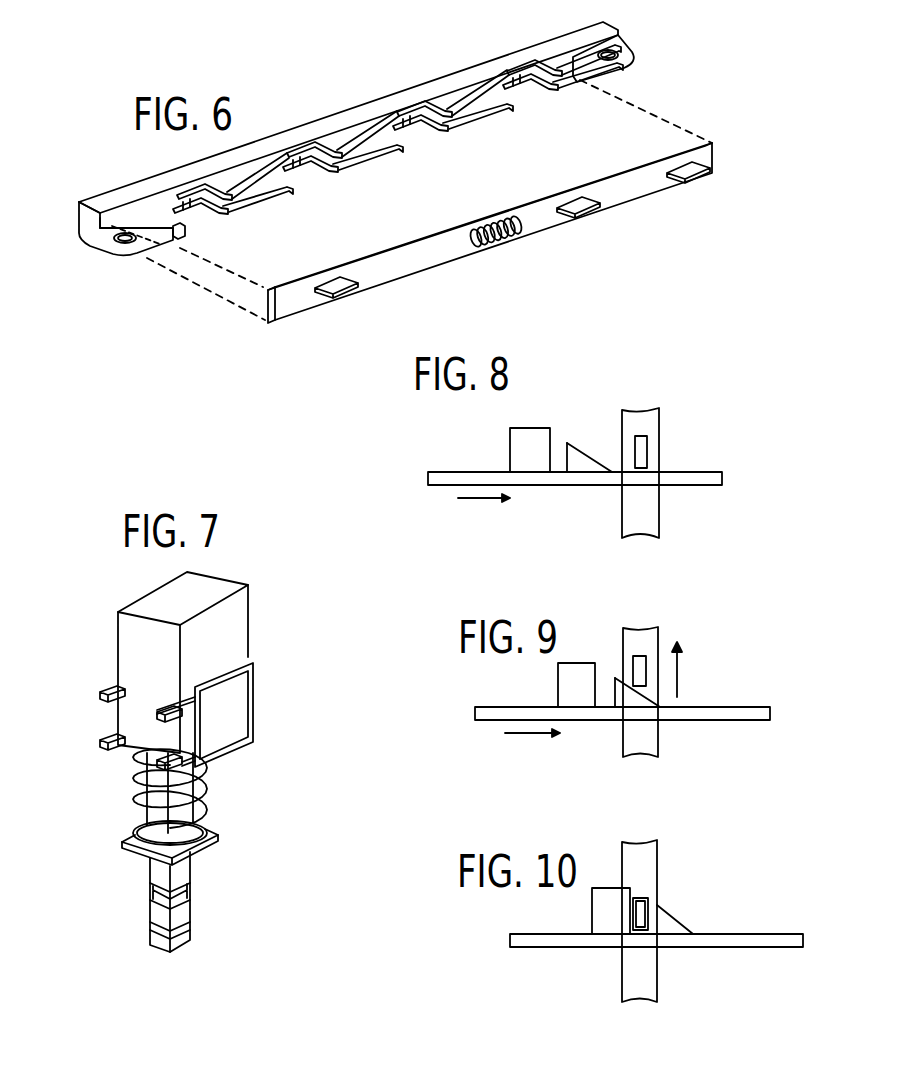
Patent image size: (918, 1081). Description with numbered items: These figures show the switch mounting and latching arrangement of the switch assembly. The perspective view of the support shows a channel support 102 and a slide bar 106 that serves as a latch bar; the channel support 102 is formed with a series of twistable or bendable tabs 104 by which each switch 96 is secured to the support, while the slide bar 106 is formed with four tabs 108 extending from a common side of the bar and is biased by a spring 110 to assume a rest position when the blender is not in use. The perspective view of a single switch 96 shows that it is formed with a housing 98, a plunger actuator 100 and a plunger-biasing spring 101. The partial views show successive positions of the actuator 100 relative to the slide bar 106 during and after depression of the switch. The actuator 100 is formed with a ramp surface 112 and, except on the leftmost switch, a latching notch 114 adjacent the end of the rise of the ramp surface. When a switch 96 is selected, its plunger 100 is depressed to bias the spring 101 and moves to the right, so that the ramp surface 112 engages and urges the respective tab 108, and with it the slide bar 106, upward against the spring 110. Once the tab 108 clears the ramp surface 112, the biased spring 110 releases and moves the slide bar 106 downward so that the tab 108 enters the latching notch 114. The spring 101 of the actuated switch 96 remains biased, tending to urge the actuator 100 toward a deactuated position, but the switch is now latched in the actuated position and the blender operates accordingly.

In FIG. 7, the electrical switch 96 is at (242, 579).
In FIG. 7, the housing 98 is at (125, 635).
In FIG. 7, the plunger actuator 100 is at (185, 903).
In FIG. 8, the plunger actuator 100 is at (447, 482).
In FIG. 9, the plunger actuator 100 is at (487, 713).
In FIG. 10, the plunger actuator 100 is at (522, 942).
In FIG. 7, the plunger-biasing spring 101 is at (210, 797).
In FIG. 6, the channel support 102 is at (473, 70).
In FIG. 7, the channel support 102 is at (253, 700).
In FIG. 6, the tabs 104 is at (232, 212).
In FIG. 7, the tabs 104 is at (110, 690).
In FIG. 6, the slide bar 106 is at (712, 155).
In FIG. 8, the slide bar 106 is at (650, 420).
In FIG. 9, the slide bar 106 is at (650, 638).
In FIG. 10, the slide bar 106 is at (650, 852).
In FIG. 6, the tabs 108 is at (700, 178).
In FIG. 8, the tabs 108 is at (642, 460).
In FIG. 9, the tabs 108 is at (638, 660).
In FIG. 10, the tabs 108 is at (640, 908).
In FIG. 6, the spring 110 is at (508, 238).
In FIG. 8, the ramp surface 112 is at (587, 450).
In FIG. 9, the ramp surface 112 is at (650, 698).
In FIG. 10, the ramp surface 112 is at (685, 923).
In FIG. 8, the latching notch 114 is at (553, 432).
In FIG. 9, the latching notch 114 is at (600, 667).
In FIG. 10, the latching notch 114 is at (643, 902).